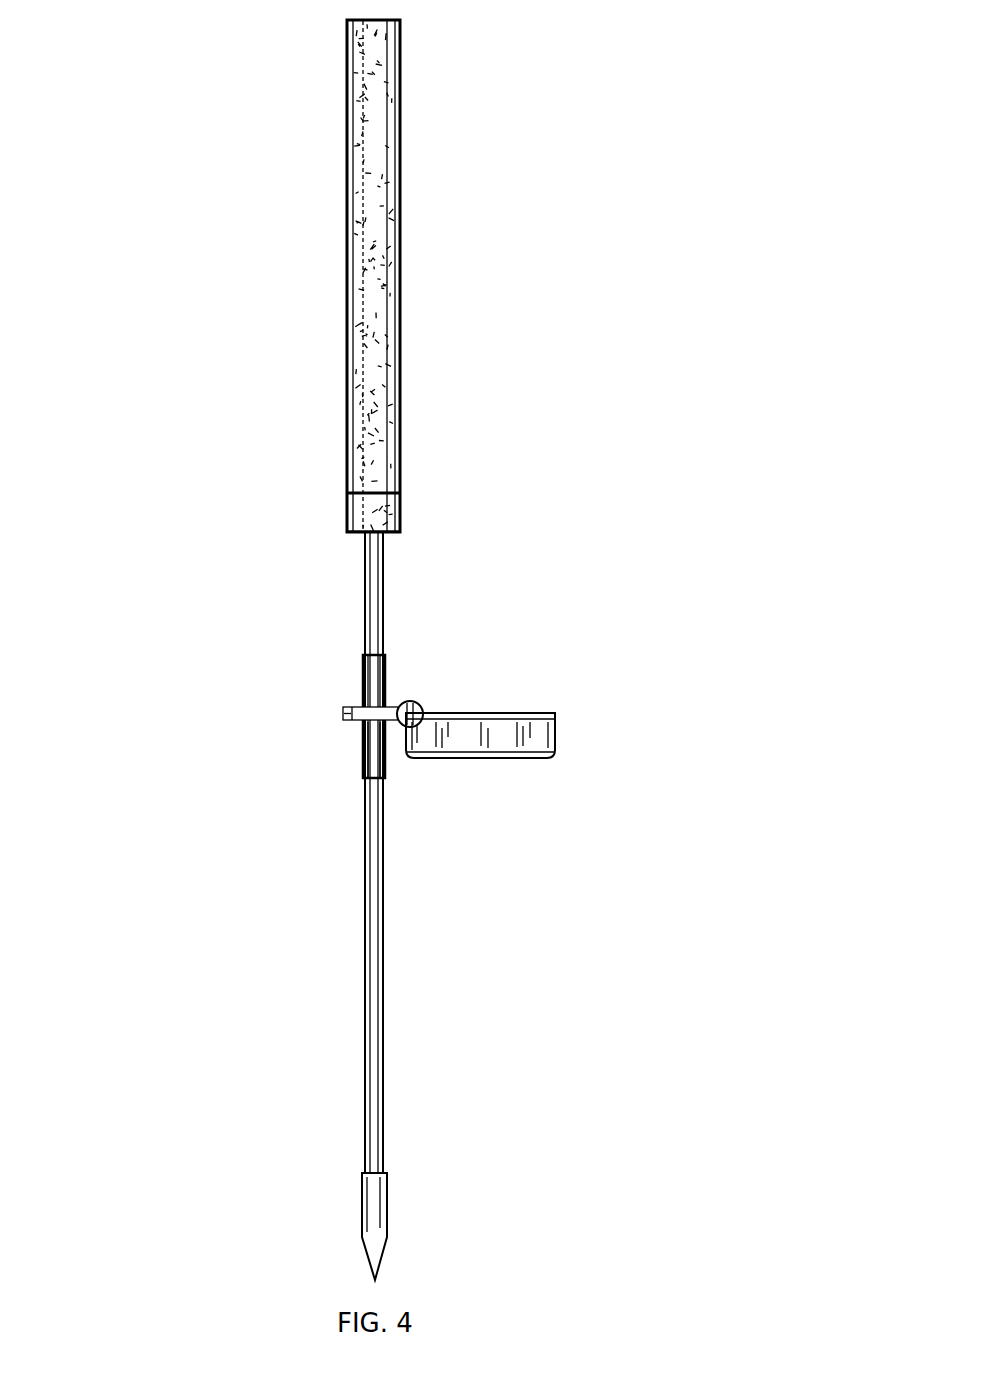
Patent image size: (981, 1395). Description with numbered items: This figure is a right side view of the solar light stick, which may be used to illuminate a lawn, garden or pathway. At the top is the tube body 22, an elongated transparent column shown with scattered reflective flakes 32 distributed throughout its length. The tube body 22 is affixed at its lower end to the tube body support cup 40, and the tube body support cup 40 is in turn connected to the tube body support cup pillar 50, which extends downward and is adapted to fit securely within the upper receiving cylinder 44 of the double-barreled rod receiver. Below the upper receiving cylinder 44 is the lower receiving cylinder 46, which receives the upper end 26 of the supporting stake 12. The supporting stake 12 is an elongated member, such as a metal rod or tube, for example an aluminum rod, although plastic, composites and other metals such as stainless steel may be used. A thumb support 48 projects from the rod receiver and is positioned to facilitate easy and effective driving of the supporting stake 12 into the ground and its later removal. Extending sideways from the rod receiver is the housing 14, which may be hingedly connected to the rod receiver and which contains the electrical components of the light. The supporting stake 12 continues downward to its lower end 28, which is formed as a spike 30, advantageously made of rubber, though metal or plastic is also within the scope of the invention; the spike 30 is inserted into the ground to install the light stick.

The supporting stake 12 is at (374, 907).
The housing 14 is at (516, 737).
The tube body 22 is at (376, 424).
The upper end 26 is at (372, 843).
The lower end 28 is at (370, 1138).
The spike 30 is at (383, 1208).
The grip texture 32 is at (370, 293).
The tube body support cup 40 is at (375, 513).
The upper receiving cylinder 44 is at (376, 680).
The lower receiving cylinder 46 is at (383, 764).
The thumb support 48 is at (347, 713).
The tube body support cup pillar 50 is at (375, 602).